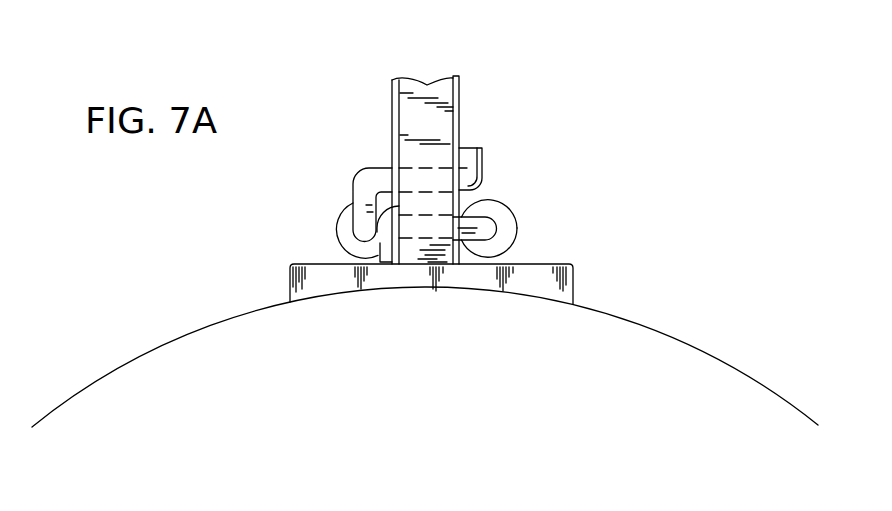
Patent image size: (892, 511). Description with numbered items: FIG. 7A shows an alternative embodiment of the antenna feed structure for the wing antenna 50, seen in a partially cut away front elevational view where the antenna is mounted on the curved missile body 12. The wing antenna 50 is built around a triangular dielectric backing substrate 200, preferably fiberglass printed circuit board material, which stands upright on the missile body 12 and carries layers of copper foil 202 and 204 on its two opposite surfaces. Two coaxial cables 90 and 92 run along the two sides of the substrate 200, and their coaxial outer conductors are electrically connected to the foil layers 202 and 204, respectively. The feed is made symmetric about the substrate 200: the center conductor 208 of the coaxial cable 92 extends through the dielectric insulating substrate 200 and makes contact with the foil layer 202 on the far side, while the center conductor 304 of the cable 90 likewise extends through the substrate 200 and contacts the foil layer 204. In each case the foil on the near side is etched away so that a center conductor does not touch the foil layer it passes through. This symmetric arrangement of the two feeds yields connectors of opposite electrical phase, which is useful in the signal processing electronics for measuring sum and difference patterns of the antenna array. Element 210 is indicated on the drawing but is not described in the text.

The missile body 12 is at (632, 318).
The wing antenna 50 is at (460, 117).
The coaxial cable 90 is at (350, 203).
The coaxial cable 92 is at (515, 218).
The dielectric backing substrate 200 is at (428, 84).
The copper foil layer 202 is at (392, 116).
The copper foil layer 204 is at (460, 98).
The center conductor 208 is at (483, 203).
The ring lower portion 210 is at (502, 254).
The center conductor 304 is at (483, 163).